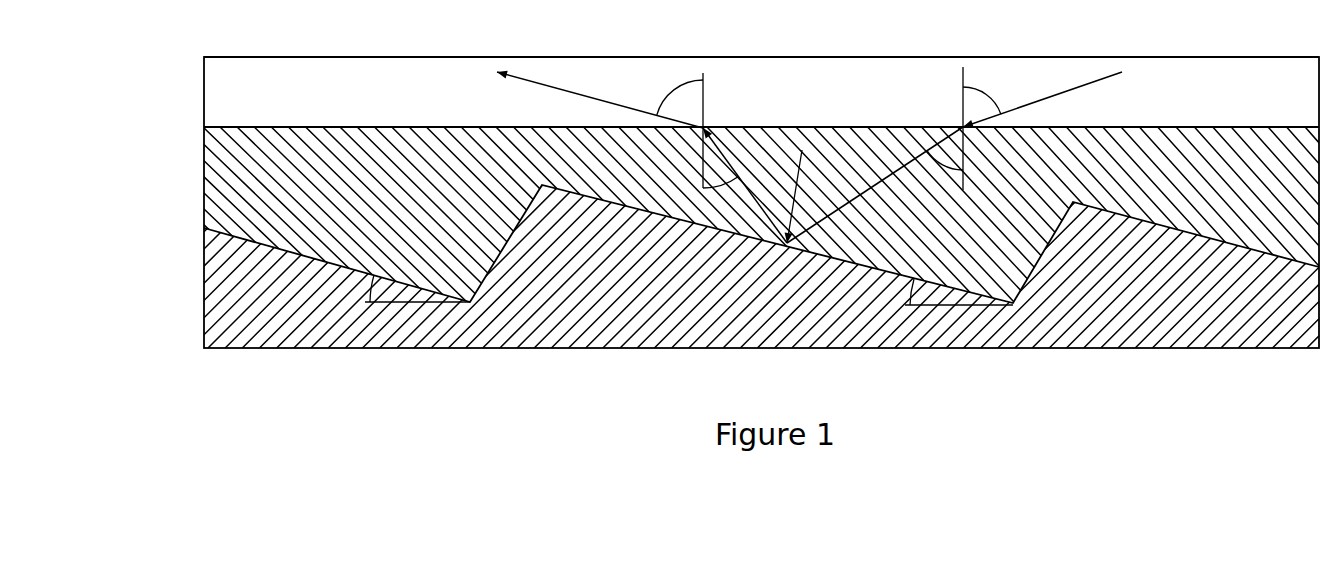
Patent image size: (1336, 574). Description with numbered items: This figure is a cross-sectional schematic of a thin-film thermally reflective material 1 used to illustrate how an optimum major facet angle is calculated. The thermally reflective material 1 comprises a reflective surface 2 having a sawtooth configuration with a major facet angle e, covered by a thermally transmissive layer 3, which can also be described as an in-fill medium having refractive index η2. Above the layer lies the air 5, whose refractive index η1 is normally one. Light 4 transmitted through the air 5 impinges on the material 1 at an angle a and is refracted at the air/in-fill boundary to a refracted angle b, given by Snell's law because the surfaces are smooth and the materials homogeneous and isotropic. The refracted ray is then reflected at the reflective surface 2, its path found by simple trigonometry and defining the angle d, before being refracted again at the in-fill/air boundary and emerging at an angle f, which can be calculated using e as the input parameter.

The thermally reflective material 1 is at (193, 130).
The reflective surface 2 is at (1086, 327).
The thermally transmissive layer 3 is at (297, 192).
The light 4 is at (1021, 99).
The air 5 is at (1213, 82).